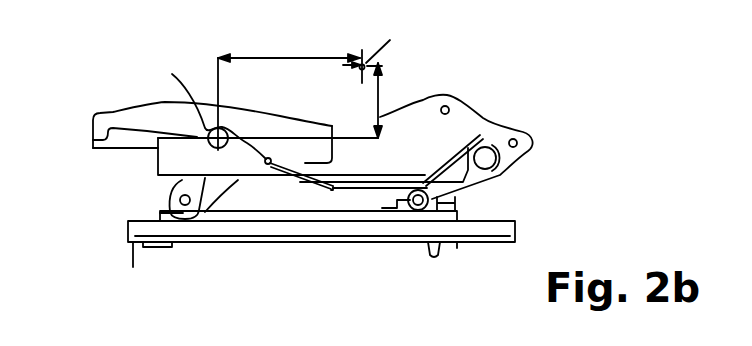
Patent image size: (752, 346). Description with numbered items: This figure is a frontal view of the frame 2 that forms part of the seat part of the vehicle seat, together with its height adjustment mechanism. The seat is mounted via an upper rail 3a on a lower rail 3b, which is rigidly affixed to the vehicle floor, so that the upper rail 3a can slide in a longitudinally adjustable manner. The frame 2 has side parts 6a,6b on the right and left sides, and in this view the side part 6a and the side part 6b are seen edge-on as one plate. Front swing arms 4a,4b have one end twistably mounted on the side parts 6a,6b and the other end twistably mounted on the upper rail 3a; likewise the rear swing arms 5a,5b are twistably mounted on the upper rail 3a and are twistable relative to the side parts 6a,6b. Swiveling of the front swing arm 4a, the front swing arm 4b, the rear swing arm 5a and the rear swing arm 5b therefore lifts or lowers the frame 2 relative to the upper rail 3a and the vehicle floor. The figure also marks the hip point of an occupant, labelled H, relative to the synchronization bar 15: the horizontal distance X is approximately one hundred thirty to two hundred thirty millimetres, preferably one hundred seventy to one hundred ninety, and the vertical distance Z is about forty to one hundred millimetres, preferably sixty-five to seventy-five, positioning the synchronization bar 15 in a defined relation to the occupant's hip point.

The frame 2 is at (490, 94).
The synchronization bar 15 is at (279, 116).
The side parts 6a,6b is at (490, 147).
The side part 6a is at (490, 147).
The side part 6b is at (500, 128).
The upper rail 3a is at (160, 214).
The lower rail 3b is at (128, 232).
The front swing arms 4a,4b is at (239, 241).
The front swing arm 4a is at (239, 241).
The front swing arm 4b is at (207, 201).
The rear swing arms 5a,5b is at (436, 254).
The rear swing arm 5a is at (436, 254).
The rear swing arm 5b is at (437, 193).